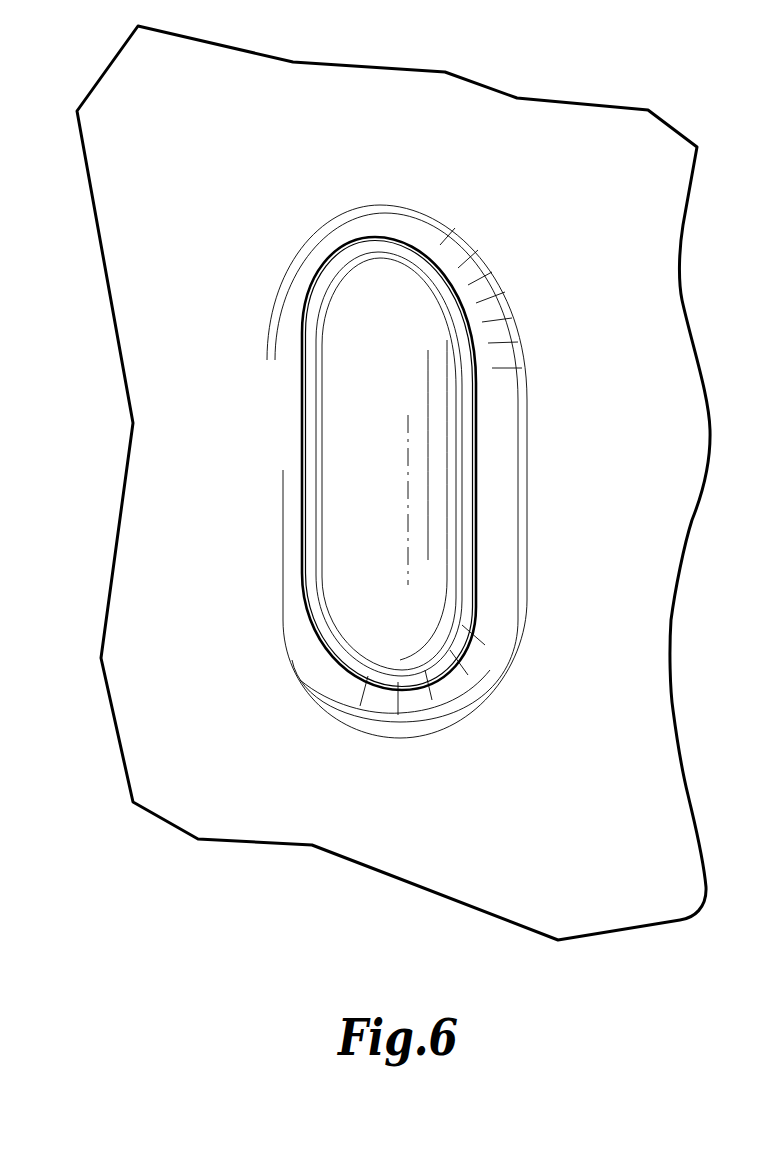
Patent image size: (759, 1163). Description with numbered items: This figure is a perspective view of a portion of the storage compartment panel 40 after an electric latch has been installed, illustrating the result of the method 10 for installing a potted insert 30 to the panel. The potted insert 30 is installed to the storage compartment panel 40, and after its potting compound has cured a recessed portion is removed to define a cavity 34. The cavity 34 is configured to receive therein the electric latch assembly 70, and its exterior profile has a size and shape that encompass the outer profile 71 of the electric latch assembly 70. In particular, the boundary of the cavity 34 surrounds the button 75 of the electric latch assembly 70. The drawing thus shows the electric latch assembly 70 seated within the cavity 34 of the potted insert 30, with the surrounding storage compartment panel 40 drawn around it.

The method 10 is at (532, 191).
The potted insert 30 is at (502, 318).
The cavity 34 is at (484, 564).
The storage compartment panel 40 is at (217, 803).
The electric latch assembly 70 is at (331, 362).
The outer profile 71 is at (463, 640).
The button 75 is at (417, 483).